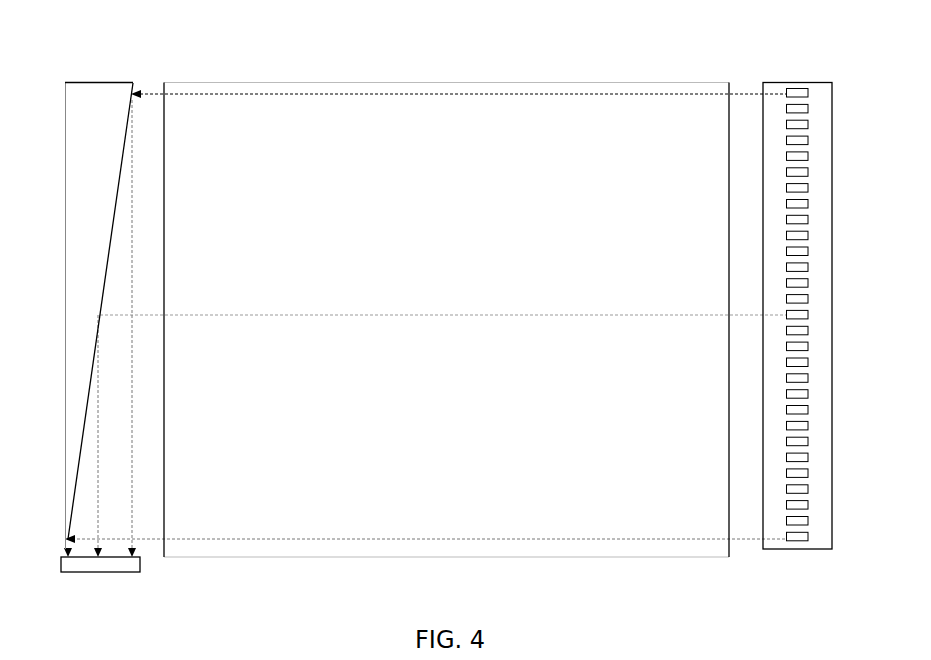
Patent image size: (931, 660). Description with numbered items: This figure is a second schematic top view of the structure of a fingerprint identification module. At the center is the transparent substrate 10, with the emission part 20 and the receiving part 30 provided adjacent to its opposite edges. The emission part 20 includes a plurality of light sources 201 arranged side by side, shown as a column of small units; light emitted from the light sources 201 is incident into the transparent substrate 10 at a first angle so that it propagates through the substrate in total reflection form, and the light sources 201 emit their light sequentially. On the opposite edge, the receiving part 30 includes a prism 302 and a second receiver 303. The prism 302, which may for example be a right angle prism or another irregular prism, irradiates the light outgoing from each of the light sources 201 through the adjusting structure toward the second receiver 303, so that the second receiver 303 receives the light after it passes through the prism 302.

The transparent substrate 10 is at (188, 118).
The emission part 20 is at (777, 104).
The light sources 201 is at (800, 156).
The receiving part 30 is at (68, 103).
The prism 302 is at (98, 142).
The second receiver 303 is at (117, 563).